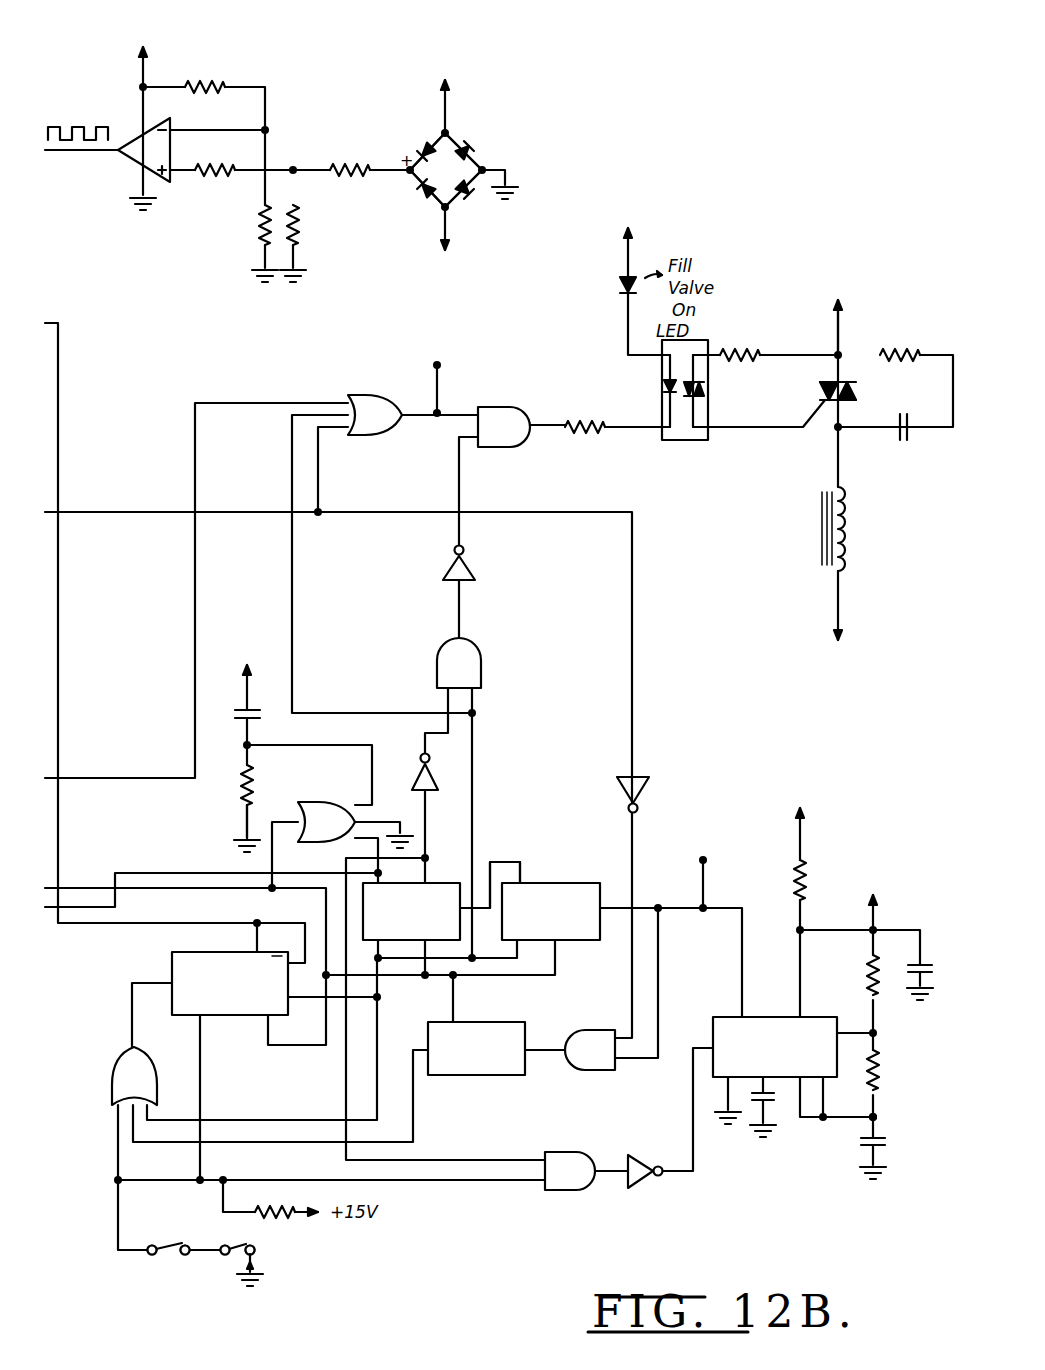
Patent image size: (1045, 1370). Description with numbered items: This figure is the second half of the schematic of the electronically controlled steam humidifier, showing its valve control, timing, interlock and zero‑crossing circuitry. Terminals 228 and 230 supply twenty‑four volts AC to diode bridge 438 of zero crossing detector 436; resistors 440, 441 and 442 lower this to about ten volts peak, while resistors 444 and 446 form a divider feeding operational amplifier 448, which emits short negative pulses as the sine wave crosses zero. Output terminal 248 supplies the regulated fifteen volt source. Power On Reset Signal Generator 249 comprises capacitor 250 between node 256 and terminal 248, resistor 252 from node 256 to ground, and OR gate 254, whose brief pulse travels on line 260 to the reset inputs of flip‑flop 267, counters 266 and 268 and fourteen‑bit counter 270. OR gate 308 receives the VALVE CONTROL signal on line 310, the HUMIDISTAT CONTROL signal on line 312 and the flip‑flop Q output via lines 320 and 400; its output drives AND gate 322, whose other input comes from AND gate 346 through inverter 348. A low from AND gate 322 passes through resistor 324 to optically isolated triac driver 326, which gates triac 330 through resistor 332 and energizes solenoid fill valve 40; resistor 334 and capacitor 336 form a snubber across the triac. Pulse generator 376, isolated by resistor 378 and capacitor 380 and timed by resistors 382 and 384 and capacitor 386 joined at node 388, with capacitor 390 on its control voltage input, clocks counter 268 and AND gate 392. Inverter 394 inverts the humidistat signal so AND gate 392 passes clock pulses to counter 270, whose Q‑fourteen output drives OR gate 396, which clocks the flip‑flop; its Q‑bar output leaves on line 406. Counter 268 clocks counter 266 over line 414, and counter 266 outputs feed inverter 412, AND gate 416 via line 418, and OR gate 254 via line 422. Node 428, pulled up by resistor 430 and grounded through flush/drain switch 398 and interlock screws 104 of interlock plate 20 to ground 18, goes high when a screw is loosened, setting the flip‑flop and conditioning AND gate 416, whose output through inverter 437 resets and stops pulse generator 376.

The output terminal 248 is at (140, 47).
The resistor 444 is at (200, 82).
The zero crossing detector 436 is at (333, 90).
The terminal 228 is at (448, 92).
The diode bridge 438 is at (478, 157).
The resistor 440 is at (345, 165).
The resistor 442 is at (300, 228).
The resistor 441 is at (205, 176).
The resistor 446 is at (262, 228).
The operational amplifier 448 is at (130, 160).
The terminal 230 is at (445, 240).
The optically isolated triac driver 326 is at (702, 341).
The resistor 332 is at (748, 366).
The resistor 334 is at (895, 353).
The triac 330 is at (862, 391).
The capacitor 336 is at (901, 441).
The solenoid fill valve 40 is at (850, 514).
The line 310 is at (210, 402).
The OR gate 308 is at (372, 397).
The AND gate 322 is at (508, 407).
The resistor 324 is at (572, 433).
The line 312 is at (130, 502).
The line 320 is at (292, 546).
The inverter 348 is at (478, 573).
The AND gate 346 is at (484, 660).
The capacitor 250 is at (232, 715).
The node 256 is at (245, 746).
The resistor 252 is at (240, 791).
The Power On Reset Signal Generator 249 is at (232, 810).
The OR gate 254 is at (308, 806).
The inverter 412 is at (415, 769).
The line 400 is at (475, 742).
The inverter 394 is at (641, 791).
The line 422 is at (145, 850).
The dual binary up counter 266 is at (445, 880).
The line 414 is at (498, 860).
The dual binary up counter 268 is at (565, 882).
The resistor 378 is at (797, 878).
The resistor 382 is at (870, 976).
The capacitor 380 is at (928, 973).
The resistor 384 is at (878, 1066).
The node 388 is at (877, 1113).
The capacitor 386 is at (886, 1143).
The pulse generator 376 is at (713, 1019).
The capacitor 390 is at (775, 1104).
The line 260 is at (210, 889).
The flip-flop 267 is at (178, 960).
The line 406 is at (90, 926).
The OR gate 396 is at (112, 1066).
The 14-bit binary counter 270 is at (470, 1068).
The AND gate 392 is at (586, 1072).
The AND gate 416 is at (576, 1186).
The inverter 437 is at (648, 1186).
The line 418 is at (455, 1153).
The node 428 is at (116, 1181).
The resistor 430 is at (282, 1219).
The interlock plate 20 is at (244, 1249).
The flush/drain switch 398 is at (165, 1256).
The interlock screws 104 is at (222, 1259).
The ground 18 is at (247, 1274).